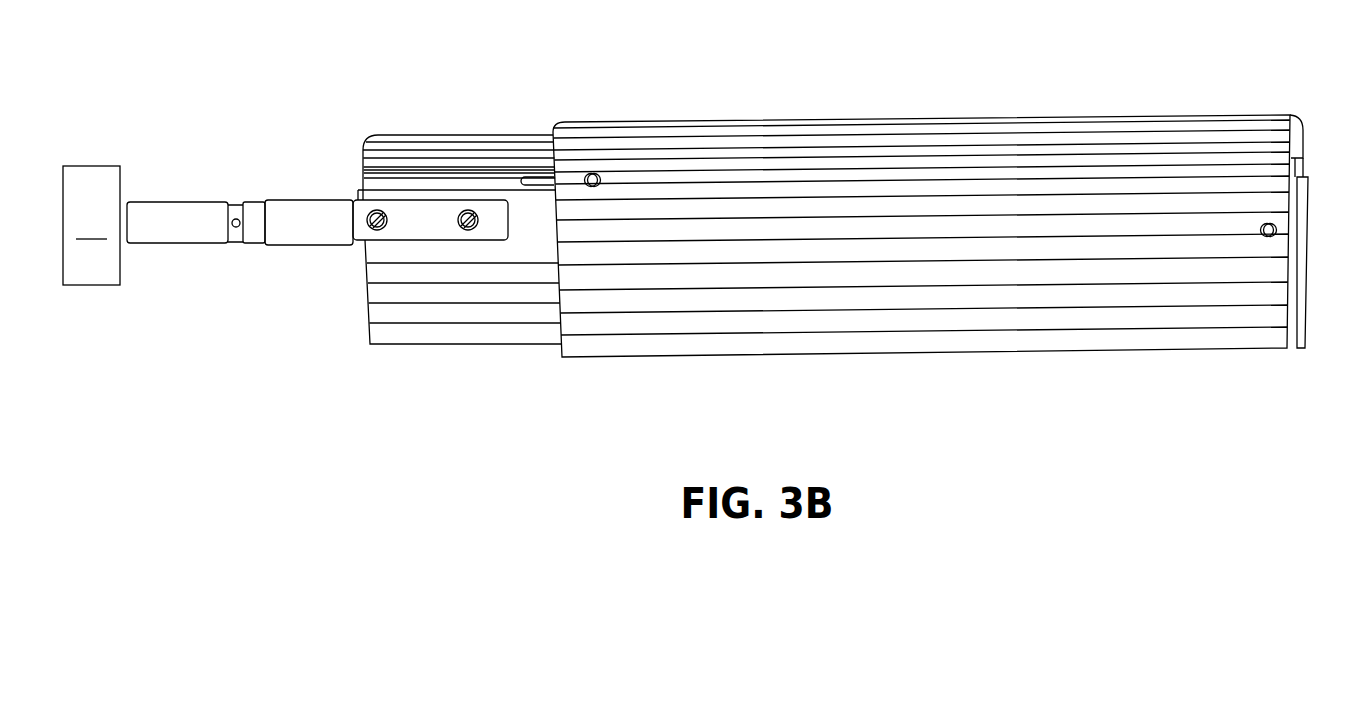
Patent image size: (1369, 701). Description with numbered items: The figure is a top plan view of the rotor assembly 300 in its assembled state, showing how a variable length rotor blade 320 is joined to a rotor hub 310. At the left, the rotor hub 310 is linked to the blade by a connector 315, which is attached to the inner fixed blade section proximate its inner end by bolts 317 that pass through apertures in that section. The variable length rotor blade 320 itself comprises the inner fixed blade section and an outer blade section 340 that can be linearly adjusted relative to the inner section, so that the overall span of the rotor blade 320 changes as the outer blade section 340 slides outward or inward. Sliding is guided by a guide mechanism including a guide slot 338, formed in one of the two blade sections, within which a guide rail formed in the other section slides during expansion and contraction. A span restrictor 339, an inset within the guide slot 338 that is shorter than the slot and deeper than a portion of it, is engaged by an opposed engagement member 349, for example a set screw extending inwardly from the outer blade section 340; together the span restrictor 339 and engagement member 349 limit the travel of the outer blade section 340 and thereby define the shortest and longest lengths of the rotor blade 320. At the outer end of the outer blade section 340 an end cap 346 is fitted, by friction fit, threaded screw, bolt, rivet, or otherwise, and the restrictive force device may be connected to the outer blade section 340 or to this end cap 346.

The rotor assembly 300 is at (1173, 60).
The rotor hub 310 is at (91, 225).
The connector 315 is at (230, 268).
The bolts 317 is at (460, 228).
The variable length rotor blade 320 is at (525, 368).
The guide slot 338 is at (452, 178).
The span restrictor 339 is at (540, 178).
The outer blade section 340 is at (1242, 351).
The end cap 346 is at (1297, 322).
The engagement member 349 is at (592, 188).